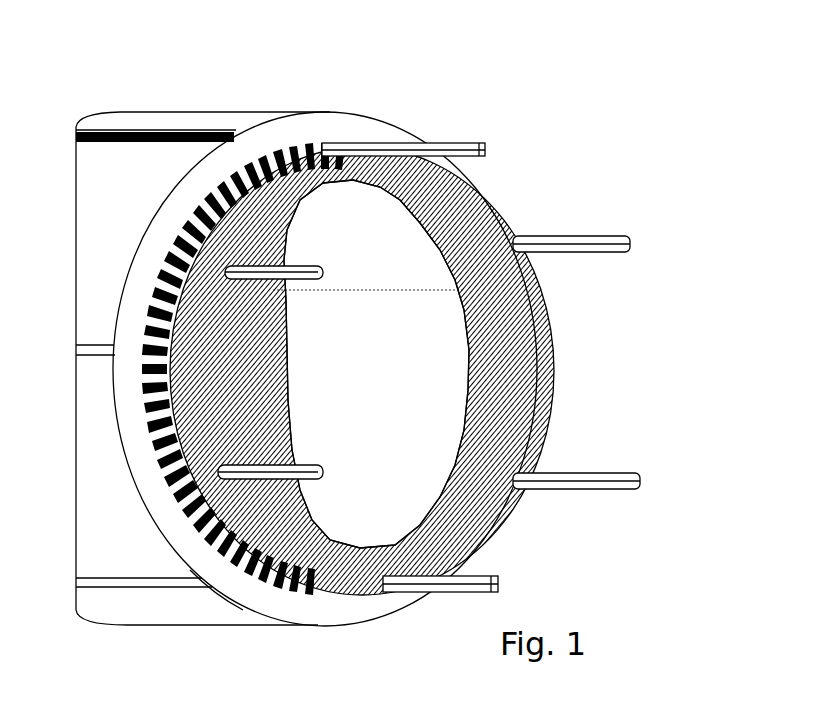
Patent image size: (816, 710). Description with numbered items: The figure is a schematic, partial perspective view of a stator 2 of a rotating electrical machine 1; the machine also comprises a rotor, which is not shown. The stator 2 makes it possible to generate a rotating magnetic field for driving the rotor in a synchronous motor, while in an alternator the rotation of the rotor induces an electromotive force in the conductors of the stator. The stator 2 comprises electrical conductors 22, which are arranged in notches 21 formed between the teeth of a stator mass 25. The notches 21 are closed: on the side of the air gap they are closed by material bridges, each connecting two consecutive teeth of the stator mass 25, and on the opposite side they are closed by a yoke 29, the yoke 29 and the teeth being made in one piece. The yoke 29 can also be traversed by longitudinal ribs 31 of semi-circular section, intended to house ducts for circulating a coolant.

The rotating electrical machine 1 is at (358, 364).
The stator 2 is at (376, 364).
The notches 21 is at (556, 381).
The electrical conductors 22 is at (552, 317).
The stator mass 25 is at (243, 590).
The yoke 29 is at (320, 128).
The longitudinal ribs 31 is at (187, 131).